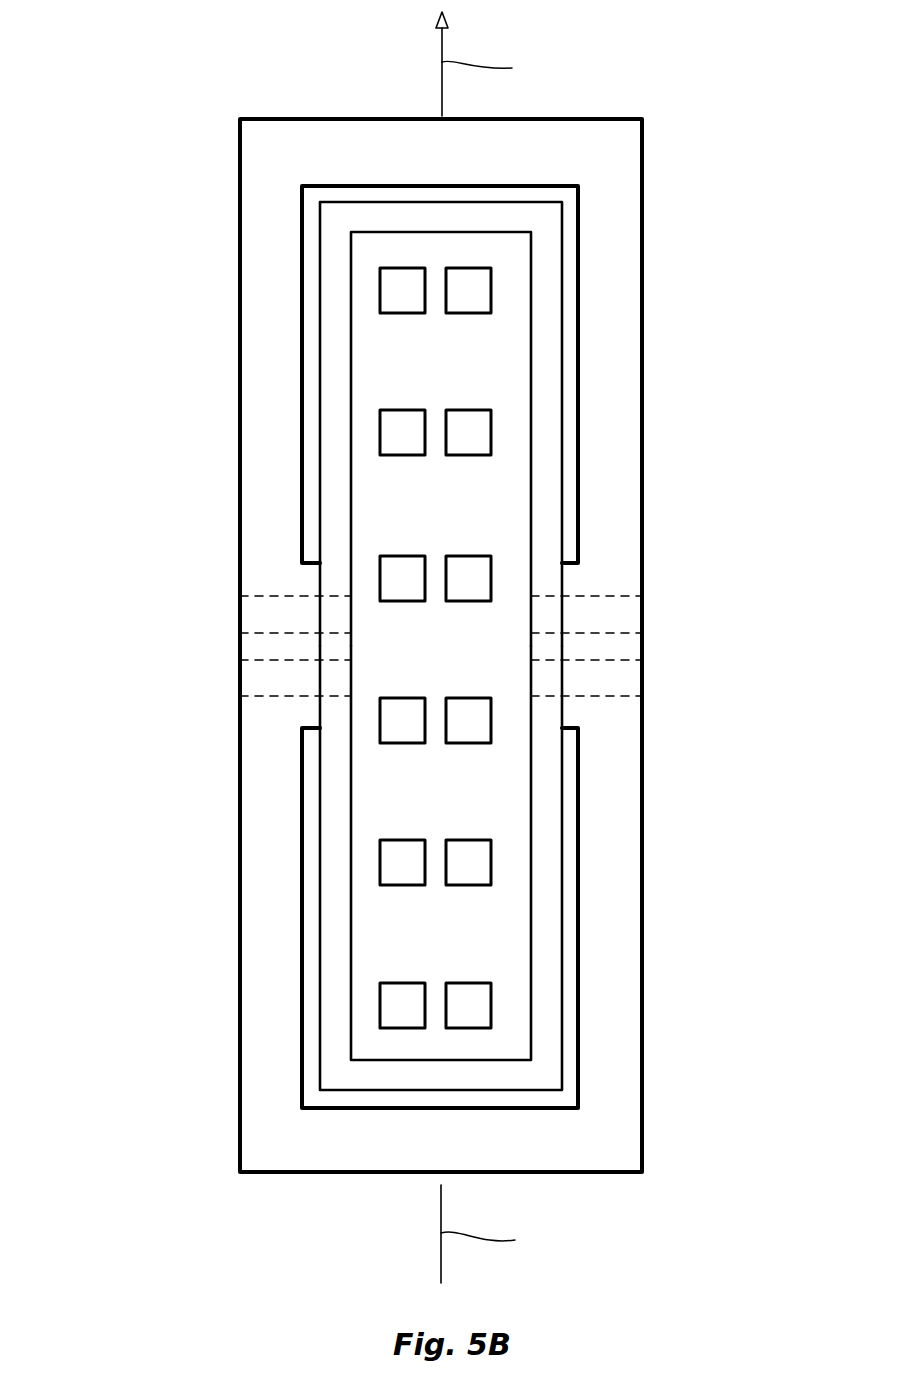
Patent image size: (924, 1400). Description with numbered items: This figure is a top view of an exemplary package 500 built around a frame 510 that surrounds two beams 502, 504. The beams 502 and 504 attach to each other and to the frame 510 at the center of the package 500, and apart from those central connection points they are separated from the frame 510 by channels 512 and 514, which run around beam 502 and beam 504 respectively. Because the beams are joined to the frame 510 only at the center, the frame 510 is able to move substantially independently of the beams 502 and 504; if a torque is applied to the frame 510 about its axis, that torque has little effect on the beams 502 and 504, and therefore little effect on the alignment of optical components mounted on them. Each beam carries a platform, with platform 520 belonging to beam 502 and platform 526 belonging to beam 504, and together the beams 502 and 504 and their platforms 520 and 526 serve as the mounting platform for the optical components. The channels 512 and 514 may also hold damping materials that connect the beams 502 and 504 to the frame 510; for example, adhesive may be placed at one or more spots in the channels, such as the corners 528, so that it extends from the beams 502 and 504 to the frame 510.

The package 500 is at (200, 70).
The beam 502 is at (493, 368).
The beam 504 is at (477, 925).
The frame 510 is at (620, 498).
The channel 512 is at (313, 360).
The channel 514 is at (310, 882).
The platform 520 is at (420, 492).
The platform 526 is at (406, 777).
The corners 528 is at (314, 192).